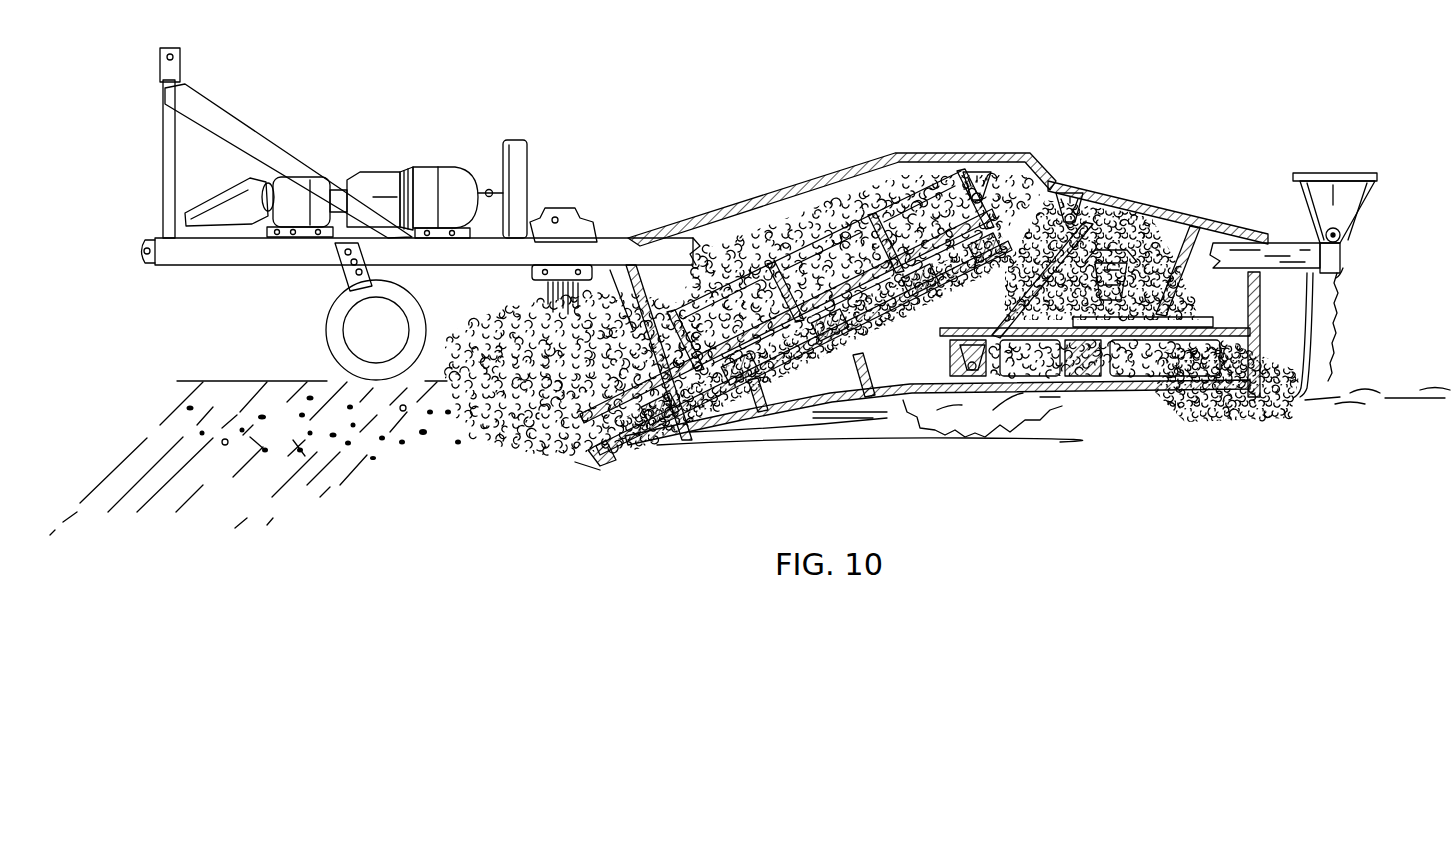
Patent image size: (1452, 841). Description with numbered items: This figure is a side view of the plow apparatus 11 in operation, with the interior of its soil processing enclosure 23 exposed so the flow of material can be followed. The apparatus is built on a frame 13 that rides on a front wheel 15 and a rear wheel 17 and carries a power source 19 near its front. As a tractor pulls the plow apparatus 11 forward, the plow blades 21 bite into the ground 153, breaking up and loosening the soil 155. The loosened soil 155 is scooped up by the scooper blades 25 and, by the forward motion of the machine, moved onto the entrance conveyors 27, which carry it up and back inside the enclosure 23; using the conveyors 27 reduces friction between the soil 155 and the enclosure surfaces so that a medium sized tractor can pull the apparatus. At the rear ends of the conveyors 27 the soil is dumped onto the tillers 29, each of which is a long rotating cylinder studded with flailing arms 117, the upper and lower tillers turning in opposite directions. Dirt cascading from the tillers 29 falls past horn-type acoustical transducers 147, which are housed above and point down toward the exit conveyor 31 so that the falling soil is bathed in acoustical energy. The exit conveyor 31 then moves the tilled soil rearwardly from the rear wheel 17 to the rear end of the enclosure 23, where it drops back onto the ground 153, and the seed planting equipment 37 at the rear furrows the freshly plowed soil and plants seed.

The plow apparatus 11 is at (677, 203).
The frame 13 is at (608, 247).
The wheel 15 is at (327, 324).
The rear wheel 17 is at (974, 420).
The power source 19 is at (352, 148).
The plow blades 21 is at (553, 302).
The soil processing enclosure 23 is at (922, 230).
The scooper blades 25 is at (613, 452).
The entrance conveyors 27 is at (850, 230).
The tillers 29 is at (1084, 205).
The exit conveyor 31 is at (1127, 338).
The seed planting equipment 37 is at (1323, 177).
The flailing arms 117 is at (1045, 225).
The horn-type acoustical transducers 147 is at (1168, 240).
The ground 153 is at (233, 398).
The soil 155 is at (667, 367).